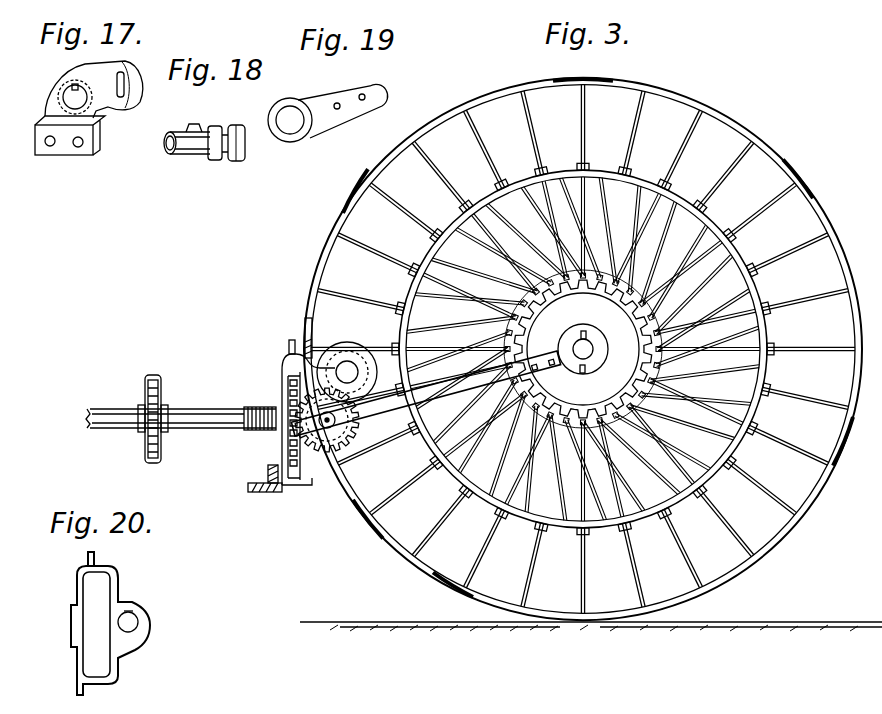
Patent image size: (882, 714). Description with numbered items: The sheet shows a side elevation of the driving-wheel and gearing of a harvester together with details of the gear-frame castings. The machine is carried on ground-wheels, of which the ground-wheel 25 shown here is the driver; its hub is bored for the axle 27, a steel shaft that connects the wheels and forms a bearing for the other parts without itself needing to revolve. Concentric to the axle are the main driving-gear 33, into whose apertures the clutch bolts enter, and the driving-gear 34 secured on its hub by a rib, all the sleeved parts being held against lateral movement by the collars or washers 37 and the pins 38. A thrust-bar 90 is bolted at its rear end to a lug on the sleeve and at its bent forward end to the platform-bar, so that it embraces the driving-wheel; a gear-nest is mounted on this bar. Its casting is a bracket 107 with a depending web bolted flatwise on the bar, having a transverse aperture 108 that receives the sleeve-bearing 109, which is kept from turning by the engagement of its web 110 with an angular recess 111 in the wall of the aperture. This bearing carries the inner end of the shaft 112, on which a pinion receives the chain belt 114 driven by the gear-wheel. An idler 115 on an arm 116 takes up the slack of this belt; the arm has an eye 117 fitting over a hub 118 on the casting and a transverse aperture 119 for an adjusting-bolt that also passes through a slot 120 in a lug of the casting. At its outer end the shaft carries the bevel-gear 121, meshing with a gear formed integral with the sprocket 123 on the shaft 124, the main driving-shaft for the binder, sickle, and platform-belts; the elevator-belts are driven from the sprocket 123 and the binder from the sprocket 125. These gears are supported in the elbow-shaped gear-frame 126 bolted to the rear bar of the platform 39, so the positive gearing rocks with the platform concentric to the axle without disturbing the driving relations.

In FIG. 3, the ground-wheel 25 is at (308, 272).
In FIG. 3, the main driving-gear 33 is at (424, 303).
In FIG. 3, the chain belt 114 is at (395, 263).
In FIG. 3, the driving-gear 34 is at (633, 327).
In FIG. 3, the axle 27 is at (583, 349).
In FIG. 3, the pin 38 is at (587, 332).
In FIG. 3, the collar or washer 37 is at (587, 373).
In FIG. 3, the thrust-bar 90 is at (425, 393).
In FIG. 3, the shaft 124 is at (190, 424).
In FIG. 3, the sprocket 125 is at (142, 438).
In FIG. 3, the gear-frame 126 is at (287, 363).
In FIG. 20, the gear-frame 126 is at (118, 582).
In FIG. 3, the sprocket 123 is at (287, 432).
In FIG. 3, the platform 39 is at (273, 484).
In FIG. 3, the idler 115 is at (326, 382).
In FIG. 3, the arm 116 is at (342, 373).
In FIG. 19, the arm 116 is at (317, 104).
In FIG. 3, the bevel-gear 121 is at (346, 417).
In FIG. 3, the shaft 112 is at (327, 428).
In FIG. 17, the bracket 107 is at (57, 108).
In FIG. 17, the hub 118 is at (100, 110).
In FIG. 17, the transverse aperture 108 is at (68, 89).
In FIG. 17, the angular recess 111 is at (78, 84).
In FIG. 17, the slot 120 is at (132, 77).
In FIG. 18, the sleeve-bearing 109 is at (191, 154).
In FIG. 18, the web 110 is at (194, 126).
In FIG. 19, the eye 117 is at (303, 128).
In FIG. 19, the transverse aperture 119 is at (339, 109).